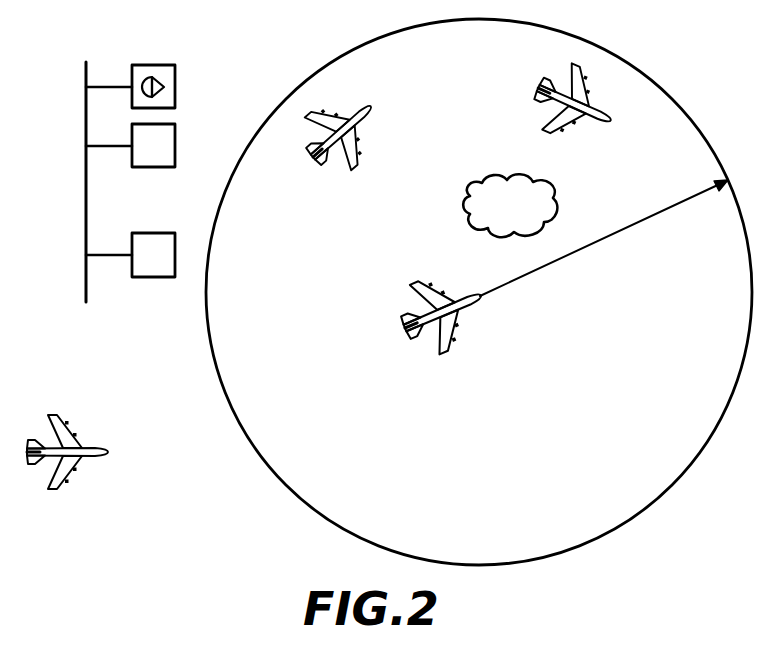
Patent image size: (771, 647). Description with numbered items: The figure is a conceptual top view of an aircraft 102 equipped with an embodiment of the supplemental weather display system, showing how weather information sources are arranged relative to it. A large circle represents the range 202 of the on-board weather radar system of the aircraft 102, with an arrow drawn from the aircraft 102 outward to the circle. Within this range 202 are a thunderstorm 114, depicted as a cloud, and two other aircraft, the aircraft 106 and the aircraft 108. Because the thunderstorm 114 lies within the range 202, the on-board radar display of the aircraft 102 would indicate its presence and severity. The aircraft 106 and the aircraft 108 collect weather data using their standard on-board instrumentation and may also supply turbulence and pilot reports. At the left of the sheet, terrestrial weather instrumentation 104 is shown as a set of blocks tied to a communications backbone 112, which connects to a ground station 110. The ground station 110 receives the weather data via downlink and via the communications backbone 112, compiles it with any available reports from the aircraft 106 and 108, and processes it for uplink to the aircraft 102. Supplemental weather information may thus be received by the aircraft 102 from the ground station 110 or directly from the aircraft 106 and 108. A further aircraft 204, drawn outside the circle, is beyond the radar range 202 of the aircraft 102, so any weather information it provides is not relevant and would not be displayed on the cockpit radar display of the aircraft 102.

The aircraft 102 is at (458, 347).
The terrestrial weather instrumentation 104 is at (143, 182).
The aircraft 106 is at (370, 107).
The aircraft 108 is at (610, 121).
The ground station 110 is at (155, 233).
The communications backbone 112 is at (86, 182).
The thunderstorm 114 is at (478, 198).
The range 202 is at (603, 235).
The aircraft 204 is at (100, 448).